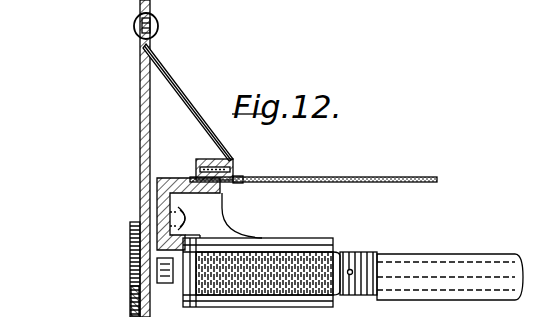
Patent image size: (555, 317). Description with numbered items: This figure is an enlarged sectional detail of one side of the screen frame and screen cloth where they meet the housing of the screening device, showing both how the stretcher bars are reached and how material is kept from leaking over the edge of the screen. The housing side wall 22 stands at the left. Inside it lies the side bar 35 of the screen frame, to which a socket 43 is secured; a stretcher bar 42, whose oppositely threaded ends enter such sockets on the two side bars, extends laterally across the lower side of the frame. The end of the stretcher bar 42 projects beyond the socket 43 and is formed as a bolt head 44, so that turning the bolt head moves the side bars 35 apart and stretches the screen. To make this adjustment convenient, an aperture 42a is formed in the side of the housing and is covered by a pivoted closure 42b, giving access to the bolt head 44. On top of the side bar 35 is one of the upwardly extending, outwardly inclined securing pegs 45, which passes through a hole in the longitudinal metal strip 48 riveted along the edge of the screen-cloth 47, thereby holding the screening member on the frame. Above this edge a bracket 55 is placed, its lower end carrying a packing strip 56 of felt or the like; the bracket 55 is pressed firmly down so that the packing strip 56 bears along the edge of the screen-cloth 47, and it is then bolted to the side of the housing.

The side wall 22 is at (141, 121).
The side bar 35 is at (157, 192).
The stretcher bar 42 is at (428, 266).
The aperture 42a is at (130, 291).
The pivoted closure 42b is at (130, 259).
The socket 43 is at (226, 303).
The bolt head 44 is at (163, 285).
The securing peg 45 is at (191, 172).
The screen-cloth 47 is at (356, 183).
The metal strip 48 is at (239, 183).
The bracket 55 is at (193, 110).
The packing strip 56 is at (236, 166).